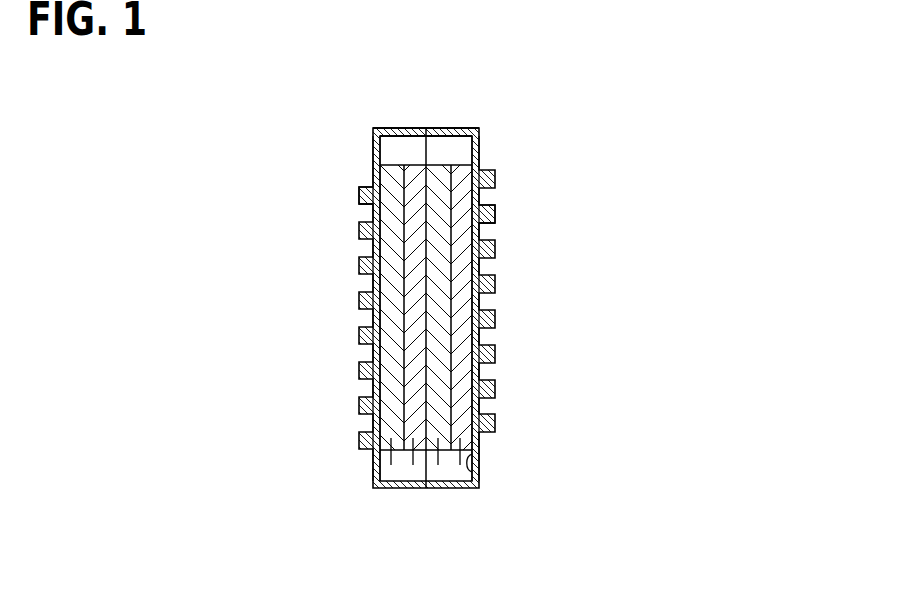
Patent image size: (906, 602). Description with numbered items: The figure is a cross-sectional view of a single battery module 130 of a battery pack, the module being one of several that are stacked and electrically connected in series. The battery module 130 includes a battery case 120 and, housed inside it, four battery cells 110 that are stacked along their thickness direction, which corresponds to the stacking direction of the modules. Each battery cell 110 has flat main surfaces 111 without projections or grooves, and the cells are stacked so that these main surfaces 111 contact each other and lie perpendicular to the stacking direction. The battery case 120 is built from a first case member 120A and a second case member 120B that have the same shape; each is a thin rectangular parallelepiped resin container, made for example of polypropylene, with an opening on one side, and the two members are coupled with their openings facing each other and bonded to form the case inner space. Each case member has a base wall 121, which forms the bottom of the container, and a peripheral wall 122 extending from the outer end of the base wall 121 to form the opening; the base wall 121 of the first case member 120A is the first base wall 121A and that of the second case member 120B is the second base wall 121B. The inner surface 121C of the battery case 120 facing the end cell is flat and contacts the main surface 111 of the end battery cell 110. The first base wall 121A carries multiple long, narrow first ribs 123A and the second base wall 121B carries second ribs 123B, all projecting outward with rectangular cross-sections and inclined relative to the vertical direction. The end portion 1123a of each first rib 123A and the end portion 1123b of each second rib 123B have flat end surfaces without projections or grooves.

The battery cell 110 is at (391, 465).
The main surface 111 is at (477, 298).
The battery case 120 is at (478, 48).
The first case member 120A is at (445, 128).
The second case member 120B is at (408, 128).
The base wall 121 is at (374, 145).
The first base wall 121A is at (482, 168).
The second base wall 121B is at (374, 168).
The inner surface 121C is at (476, 463).
The peripheral wall 122 is at (375, 128).
The first rib 123A is at (497, 204).
The second rib 123B is at (362, 187).
The end portion 1123a is at (497, 222).
The end portion 1123b is at (363, 203).
The battery module 130 is at (497, 97).